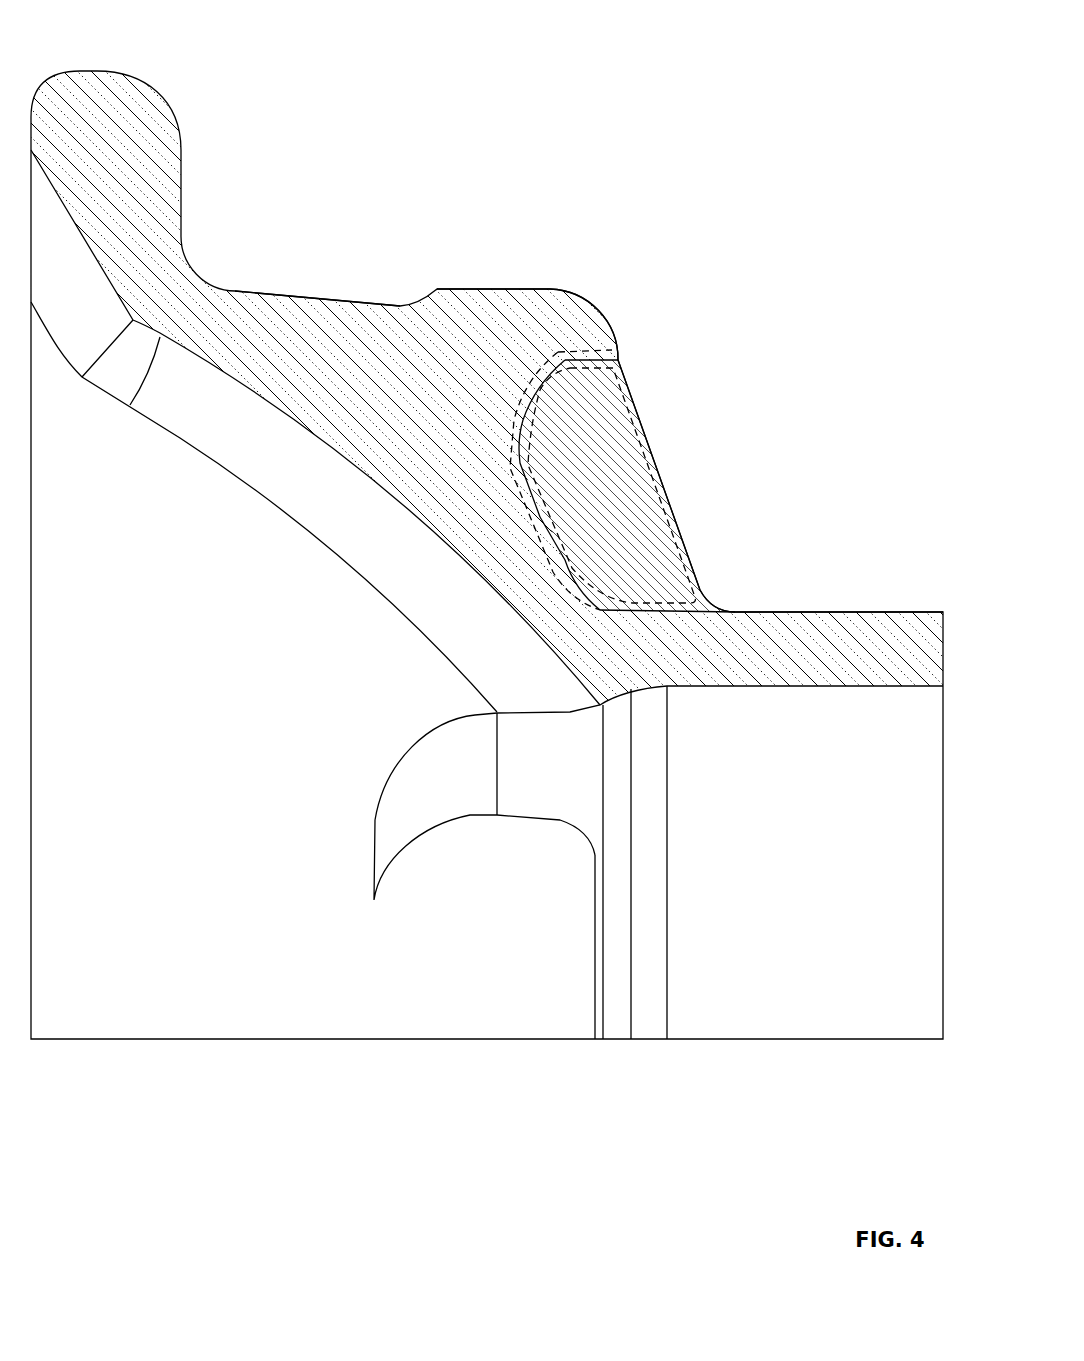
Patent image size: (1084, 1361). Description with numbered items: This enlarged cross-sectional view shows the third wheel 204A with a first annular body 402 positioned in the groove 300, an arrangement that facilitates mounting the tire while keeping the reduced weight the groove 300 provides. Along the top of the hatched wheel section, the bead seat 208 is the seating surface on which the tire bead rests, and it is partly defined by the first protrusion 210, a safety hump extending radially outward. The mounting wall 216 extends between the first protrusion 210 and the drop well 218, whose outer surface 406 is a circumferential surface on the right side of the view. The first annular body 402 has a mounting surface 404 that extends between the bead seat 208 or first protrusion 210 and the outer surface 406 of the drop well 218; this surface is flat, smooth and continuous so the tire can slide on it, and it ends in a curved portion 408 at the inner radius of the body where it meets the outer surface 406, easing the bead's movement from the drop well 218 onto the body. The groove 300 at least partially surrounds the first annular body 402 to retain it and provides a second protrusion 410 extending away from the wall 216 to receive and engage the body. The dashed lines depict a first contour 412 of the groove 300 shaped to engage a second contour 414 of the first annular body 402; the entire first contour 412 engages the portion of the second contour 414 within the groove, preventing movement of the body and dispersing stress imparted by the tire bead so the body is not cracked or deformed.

The third wheel 204A is at (800, 881).
The bead seat 208 is at (280, 296).
The first protrusion 210 is at (503, 289).
The mounting wall 216 is at (522, 467).
The drop well 218 is at (849, 282).
The groove 300 is at (607, 609).
The first annular body 402 is at (628, 507).
The mounting surface 404 is at (665, 490).
The outer surface 406 is at (882, 612).
The curved portion 408 is at (712, 606).
The second protrusion 410 is at (608, 340).
The first contour 412 is at (508, 436).
The second contour 414 is at (578, 562).